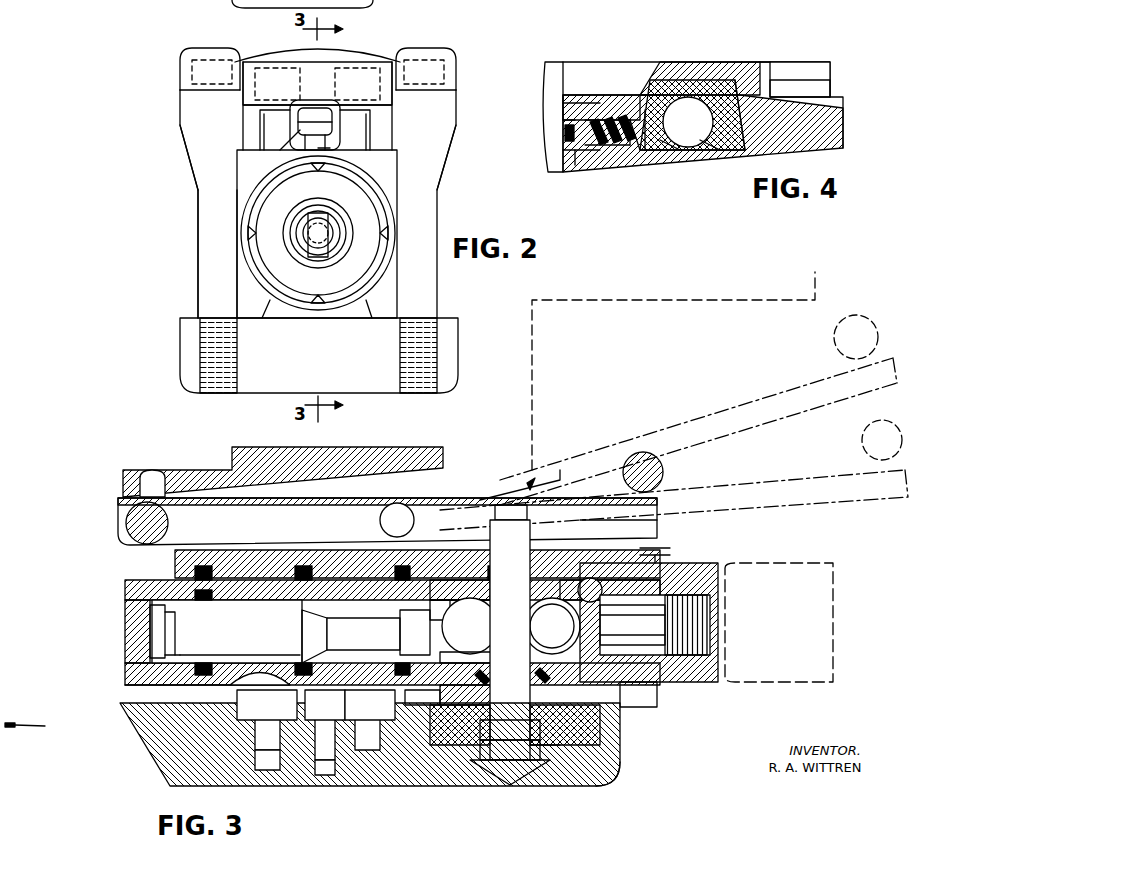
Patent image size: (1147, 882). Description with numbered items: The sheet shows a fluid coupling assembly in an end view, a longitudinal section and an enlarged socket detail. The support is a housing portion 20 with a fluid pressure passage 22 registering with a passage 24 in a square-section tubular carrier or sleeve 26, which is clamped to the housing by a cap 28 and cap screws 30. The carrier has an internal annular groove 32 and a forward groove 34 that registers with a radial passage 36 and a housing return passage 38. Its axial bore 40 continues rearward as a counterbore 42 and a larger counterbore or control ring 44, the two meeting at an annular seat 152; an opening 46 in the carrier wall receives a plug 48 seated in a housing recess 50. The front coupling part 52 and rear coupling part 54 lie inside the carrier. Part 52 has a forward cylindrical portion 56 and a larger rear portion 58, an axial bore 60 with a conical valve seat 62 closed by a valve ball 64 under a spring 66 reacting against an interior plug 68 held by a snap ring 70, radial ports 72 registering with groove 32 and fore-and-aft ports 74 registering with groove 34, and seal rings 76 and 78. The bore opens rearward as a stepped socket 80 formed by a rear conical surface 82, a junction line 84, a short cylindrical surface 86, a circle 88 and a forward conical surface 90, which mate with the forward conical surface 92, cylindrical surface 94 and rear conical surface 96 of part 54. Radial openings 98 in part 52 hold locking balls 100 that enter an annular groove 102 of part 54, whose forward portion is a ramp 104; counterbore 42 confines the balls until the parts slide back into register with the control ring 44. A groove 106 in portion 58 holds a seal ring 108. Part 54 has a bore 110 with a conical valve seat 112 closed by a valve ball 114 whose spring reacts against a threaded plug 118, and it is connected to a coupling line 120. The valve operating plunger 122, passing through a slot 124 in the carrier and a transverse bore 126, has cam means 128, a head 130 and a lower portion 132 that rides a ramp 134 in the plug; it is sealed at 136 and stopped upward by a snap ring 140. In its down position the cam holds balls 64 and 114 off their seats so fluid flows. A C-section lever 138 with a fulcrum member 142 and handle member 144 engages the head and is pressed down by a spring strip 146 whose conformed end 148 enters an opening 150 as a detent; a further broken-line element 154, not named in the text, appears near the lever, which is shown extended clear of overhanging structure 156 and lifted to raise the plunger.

In FIG. 2, the housing portion 20 is at (180, 350).
In FIG. 3, the housing portion 20 is at (415, 786).
In FIG. 3, the fluid pressure passage 22 is at (335, 770).
In FIG. 3, the passage 24 is at (360, 720).
In FIG. 2, the tubular coupling carrier or sleeve 26 is at (270, 318).
In FIG. 4, the tubular coupling carrier or sleeve 26 is at (815, 62).
In FIG. 3, the tubular coupling carrier or sleeve 26 is at (190, 703).
In FIG. 2, the cap 28 is at (180, 107).
In FIG. 3, the cap 28 is at (238, 447).
In FIG. 2, the cap screws 30 is at (198, 265).
In FIG. 3, the internal annular groove 32 is at (318, 720).
In FIG. 3, the additional groove 34 is at (258, 680).
In FIG. 3, the radial port or passage 36 is at (265, 720).
In FIG. 3, the housing passage 38 is at (270, 770).
In FIG. 3, the axial bore 40 is at (215, 593).
In FIG. 4, the counterbore 42 is at (740, 82).
In FIG. 3, the counterbore 42 is at (630, 718).
In FIG. 2, the second counterbore or control ring 44 is at (330, 300).
In FIG. 4, the second counterbore or control ring 44 is at (830, 68).
In FIG. 3, the second counterbore or control ring 44 is at (665, 550).
In FIG. 3, the circular opening 46 is at (412, 705).
In FIG. 3, the plug 48 is at (600, 735).
In FIG. 3, the circular recess 50 is at (600, 786).
In FIG. 4, the front or female coupling part 52 is at (722, 82).
In FIG. 3, the front or female coupling part 52 is at (155, 578).
In FIG. 2, the rear coupling part 54 is at (300, 298).
In FIG. 4, the rear coupling part 54 is at (848, 132).
In FIG. 3, the rear coupling part 54 is at (716, 556).
In FIG. 3, the elongated cylindrical forward portion 56 is at (150, 685).
In FIG. 4, the larger rear cylindrical portion 58 is at (595, 95).
In FIG. 3, the larger rear cylindrical portion 58 is at (515, 725).
In FIG. 3, the axial bore 60 is at (210, 663).
In FIG. 3, the annular conical valve seat 62 is at (460, 582).
In FIG. 3, the valve ball 64 is at (440, 650).
In FIG. 3, the spring 66 is at (440, 610).
In FIG. 3, the interior plug 68 is at (372, 605).
In FIG. 3, the snap ring 70 is at (160, 627).
In FIG. 3, the radial ports 72 is at (338, 650).
In FIG. 3, the fore-and-aft ports 74 is at (256, 598).
In FIG. 3, the annular seal ring 76 is at (180, 660).
In FIG. 3, the annular seal ring 78 is at (303, 562).
In FIG. 4, the stepped counterbore or socket 80 is at (652, 165).
In FIG. 3, the stepped counterbore or socket 80 is at (545, 731).
In FIG. 4, the first annular interior surface 82 is at (730, 160).
In FIG. 4, the circular junction line 84 is at (652, 110).
In FIG. 4, the second annular interior surface 86 is at (640, 110).
In FIG. 4, the circle 88 is at (608, 160).
In FIG. 4, the third annular internal surface 90 is at (582, 160).
In FIG. 4, the forward conical external surface 92 is at (560, 150).
In FIG. 4, the intermediate cylindrical surface 94 is at (630, 160).
In FIG. 4, the rear conical surface 96 is at (800, 85).
In FIG. 4, the radially directed openings 98 is at (663, 88).
In FIG. 4, the ball 100 is at (690, 105).
In FIG. 3, the ball 100 is at (600, 586).
In FIG. 4, the annular groove 102 is at (702, 165).
In FIG. 4, the annular ramp 104 is at (668, 160).
In FIG. 4, the annular groove 106 is at (563, 103).
In FIG. 4, the seal ring 108 is at (600, 165).
In FIG. 2, the internal axial passage or bore 110 is at (328, 255).
In FIG. 3, the internal axial passage or bore 110 is at (640, 655).
In FIG. 3, the conical valve seat 112 is at (552, 626).
In FIG. 3, the valve ball 114 is at (552, 626).
In FIG. 2, the threaded plug 118 is at (320, 213).
In FIG. 3, the threaded plug 118 is at (700, 605).
In FIG. 3, the coupling line 120 is at (815, 563).
In FIG. 2, the valve operating means / plunger 122 is at (325, 142).
In FIG. 4, the valve operating means / plunger 122 is at (549, 58).
In FIG. 3, the valve operating means / plunger 122 is at (527, 506).
In FIG. 3, the fore-and-aft slot 124 is at (580, 535).
In FIG. 3, the transverse bore 126 is at (455, 578).
In FIG. 3, the cam means 128 is at (500, 624).
In FIG. 2, the head 130 is at (318, 110).
In FIG. 3, the head 130 is at (414, 518).
In FIG. 3, the lower portion 132 is at (500, 730).
In FIG. 3, the ramp or cam means 134 is at (525, 755).
In FIG. 4, the seals 136 is at (565, 130).
In FIG. 3, the seals 136 is at (478, 672).
In FIG. 2, the handle or lever 138 is at (290, 140).
In FIG. 3, the handle or lever 138 is at (663, 492).
In FIG. 3, the snap ring 140 is at (490, 755).
In FIG. 3, the transverse member 142 is at (168, 523).
In FIG. 2, the transverse member 144 is at (275, 128).
In FIG. 3, the transverse member 144 is at (648, 455).
In FIG. 3, the spring strip 146 is at (172, 478).
In FIG. 3, the conformed terminal rear portion 148 is at (533, 484).
In FIG. 3, the opening 150 is at (500, 495).
In FIG. 3, the annular seat 152 is at (660, 558).
In FIG. 3, the lever 154 is at (570, 485).
In FIG. 3, the overhanging structure 156 is at (532, 370).